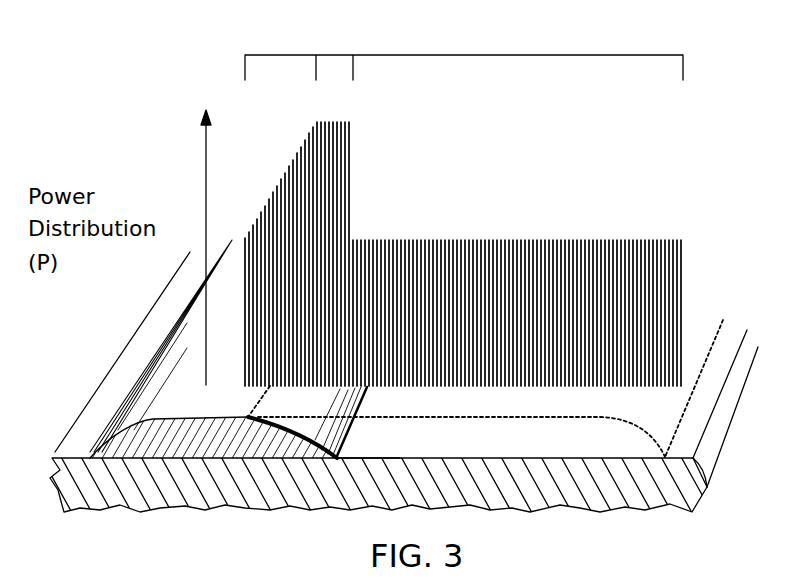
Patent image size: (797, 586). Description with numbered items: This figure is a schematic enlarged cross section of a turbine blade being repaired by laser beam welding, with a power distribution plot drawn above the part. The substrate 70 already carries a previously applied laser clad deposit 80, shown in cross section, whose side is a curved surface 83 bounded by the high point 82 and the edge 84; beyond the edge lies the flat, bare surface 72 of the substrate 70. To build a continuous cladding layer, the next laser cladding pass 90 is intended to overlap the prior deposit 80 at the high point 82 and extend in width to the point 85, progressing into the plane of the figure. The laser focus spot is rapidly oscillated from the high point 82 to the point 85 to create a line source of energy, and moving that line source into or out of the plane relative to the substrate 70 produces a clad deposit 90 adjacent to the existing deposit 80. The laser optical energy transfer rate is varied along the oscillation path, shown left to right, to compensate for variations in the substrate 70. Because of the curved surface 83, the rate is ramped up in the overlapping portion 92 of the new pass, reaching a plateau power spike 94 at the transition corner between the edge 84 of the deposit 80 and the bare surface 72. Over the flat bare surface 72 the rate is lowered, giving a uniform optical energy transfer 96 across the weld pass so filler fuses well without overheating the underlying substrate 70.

The substrate 70 is at (32, 488).
The bare surface 72 is at (500, 449).
The laser clad deposit 80 is at (130, 440).
The high point 82 is at (245, 417).
The curved surface 83 is at (320, 423).
The edge 84 is at (337, 456).
The point 85 is at (707, 487).
The laser cladding pass 90 is at (538, 36).
The overlapping portion 92 is at (279, 223).
The plateau power spike 94 is at (333, 223).
The uniform optical energy transfer 96 is at (517, 223).